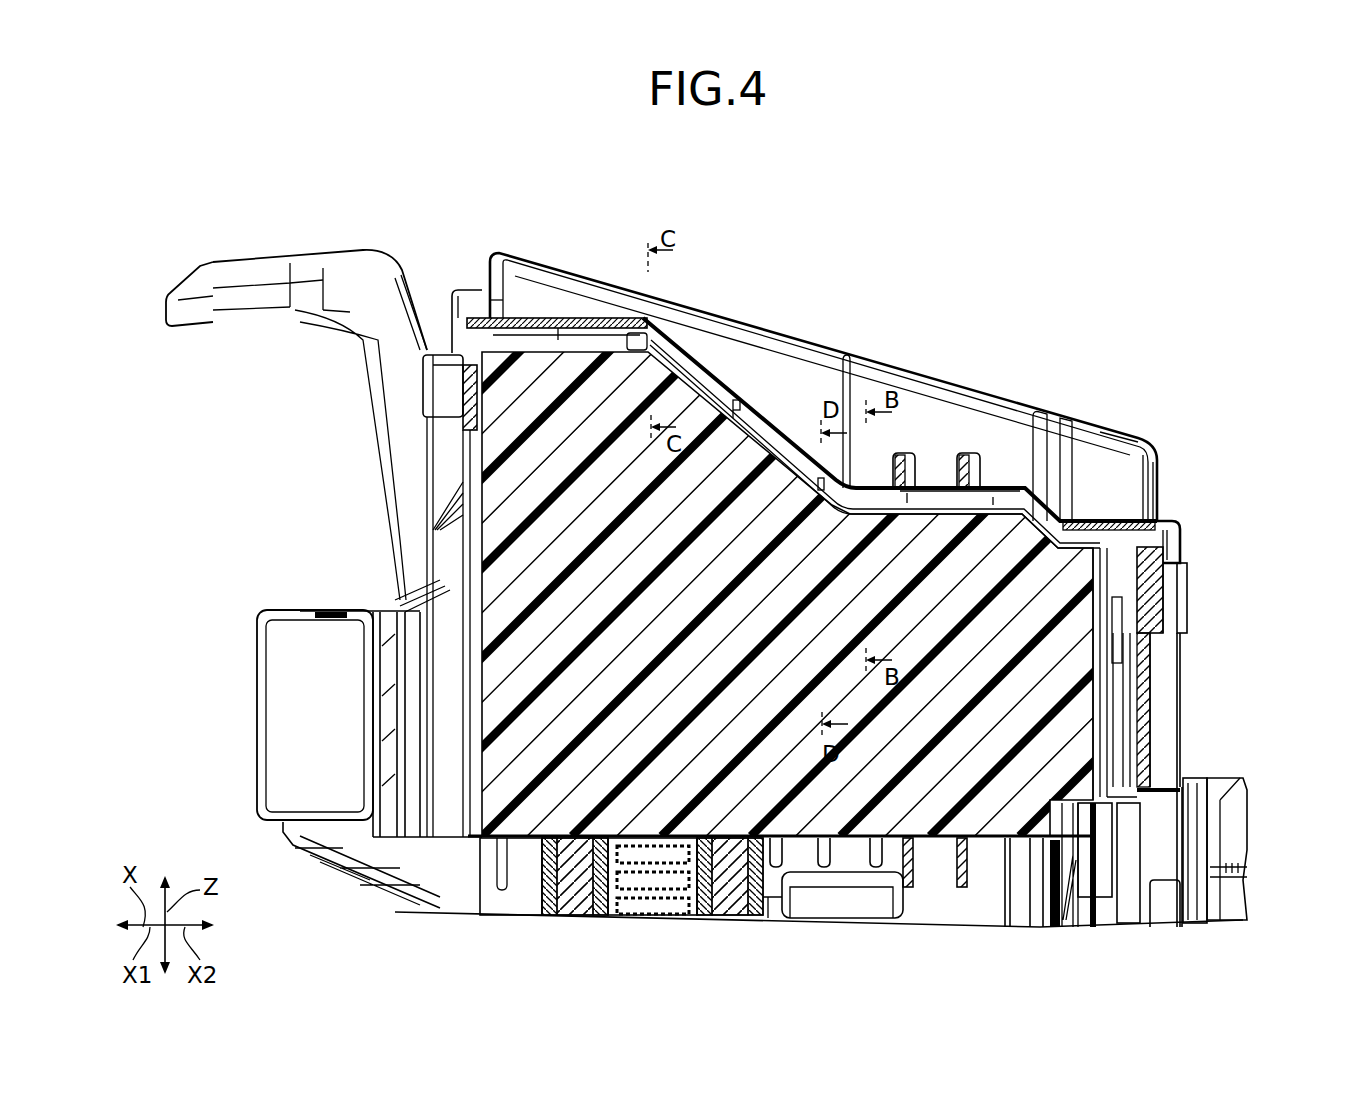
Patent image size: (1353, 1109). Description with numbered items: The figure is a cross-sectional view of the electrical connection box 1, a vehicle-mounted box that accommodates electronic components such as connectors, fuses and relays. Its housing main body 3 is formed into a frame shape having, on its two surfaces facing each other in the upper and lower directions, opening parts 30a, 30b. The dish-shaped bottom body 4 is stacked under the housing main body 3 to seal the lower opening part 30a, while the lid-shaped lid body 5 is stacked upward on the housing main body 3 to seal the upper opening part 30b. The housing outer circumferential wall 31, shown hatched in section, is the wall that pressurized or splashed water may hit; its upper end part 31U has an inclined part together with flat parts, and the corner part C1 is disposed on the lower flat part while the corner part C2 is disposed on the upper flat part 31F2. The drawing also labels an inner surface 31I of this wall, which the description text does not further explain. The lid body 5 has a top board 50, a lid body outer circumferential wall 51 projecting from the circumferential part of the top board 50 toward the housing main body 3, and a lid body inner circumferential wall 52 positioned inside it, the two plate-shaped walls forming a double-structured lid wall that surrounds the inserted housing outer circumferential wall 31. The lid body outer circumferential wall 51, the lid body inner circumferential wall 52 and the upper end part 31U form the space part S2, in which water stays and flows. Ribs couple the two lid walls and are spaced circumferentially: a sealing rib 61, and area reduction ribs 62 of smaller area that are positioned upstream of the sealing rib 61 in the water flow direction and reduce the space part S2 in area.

The electrical connection box 1 is at (1114, 292).
The housing main body 3 is at (1155, 692).
The bottom body 4 is at (527, 865).
The lid body 5 is at (1137, 430).
The opening part 30a is at (1003, 847).
The opening part 30b is at (515, 350).
The housing outer circumferential wall 31 is at (500, 533).
The flat part 31F2 is at (543, 350).
The inner face 31I is at (812, 410).
The upper end part of the housing outer circumferential wall 31U is at (1010, 497).
The top board 50 is at (815, 355).
The lid body outer circumferential wall 51 is at (475, 425).
The lid body inner circumferential wall 52 is at (832, 470).
The sealing rib 61 is at (663, 350).
The area reduction ribs 62 is at (742, 405).
The space part S2 is at (688, 375).
The corner part C1 is at (1182, 498).
The corner part C2 is at (448, 280).